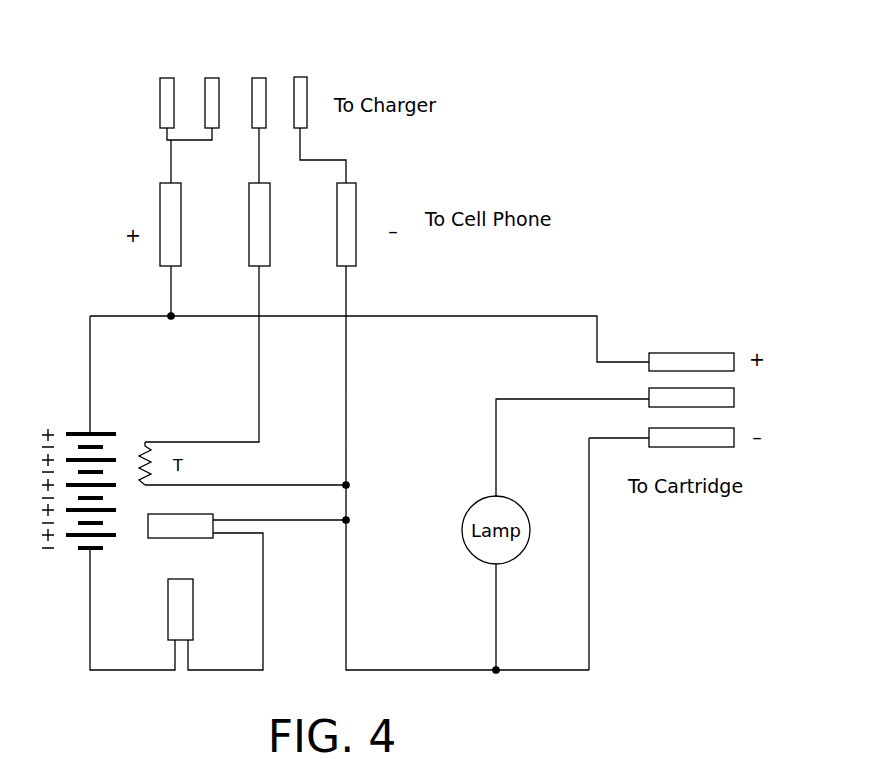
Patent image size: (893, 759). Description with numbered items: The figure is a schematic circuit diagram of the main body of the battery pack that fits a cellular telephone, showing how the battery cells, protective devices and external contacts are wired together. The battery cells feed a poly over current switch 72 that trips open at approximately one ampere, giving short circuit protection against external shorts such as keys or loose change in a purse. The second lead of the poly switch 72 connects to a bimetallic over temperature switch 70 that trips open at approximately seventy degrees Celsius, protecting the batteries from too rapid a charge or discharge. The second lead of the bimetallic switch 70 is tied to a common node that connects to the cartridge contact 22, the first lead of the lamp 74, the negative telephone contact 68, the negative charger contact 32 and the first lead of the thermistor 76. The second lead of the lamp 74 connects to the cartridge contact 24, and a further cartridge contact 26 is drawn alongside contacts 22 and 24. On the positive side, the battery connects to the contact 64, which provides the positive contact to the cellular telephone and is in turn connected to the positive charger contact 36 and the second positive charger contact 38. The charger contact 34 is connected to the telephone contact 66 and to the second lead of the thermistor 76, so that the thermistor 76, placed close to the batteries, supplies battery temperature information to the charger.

The contact 22 is at (713, 433).
The contact 24 is at (708, 398).
The cartridge positive terminal 26 is at (660, 360).
The contact 32 is at (305, 82).
The contact 34 is at (259, 85).
The contact 36 is at (212, 85).
The contact 38 is at (167, 90).
The contact 64 is at (170, 200).
The contact 66 is at (258, 228).
The contact 68 is at (348, 195).
The bimetallic over temperature switch 70 is at (163, 527).
The poly over current switch 72 is at (178, 618).
The lamp 74 is at (485, 510).
The thermistor 76 is at (168, 452).